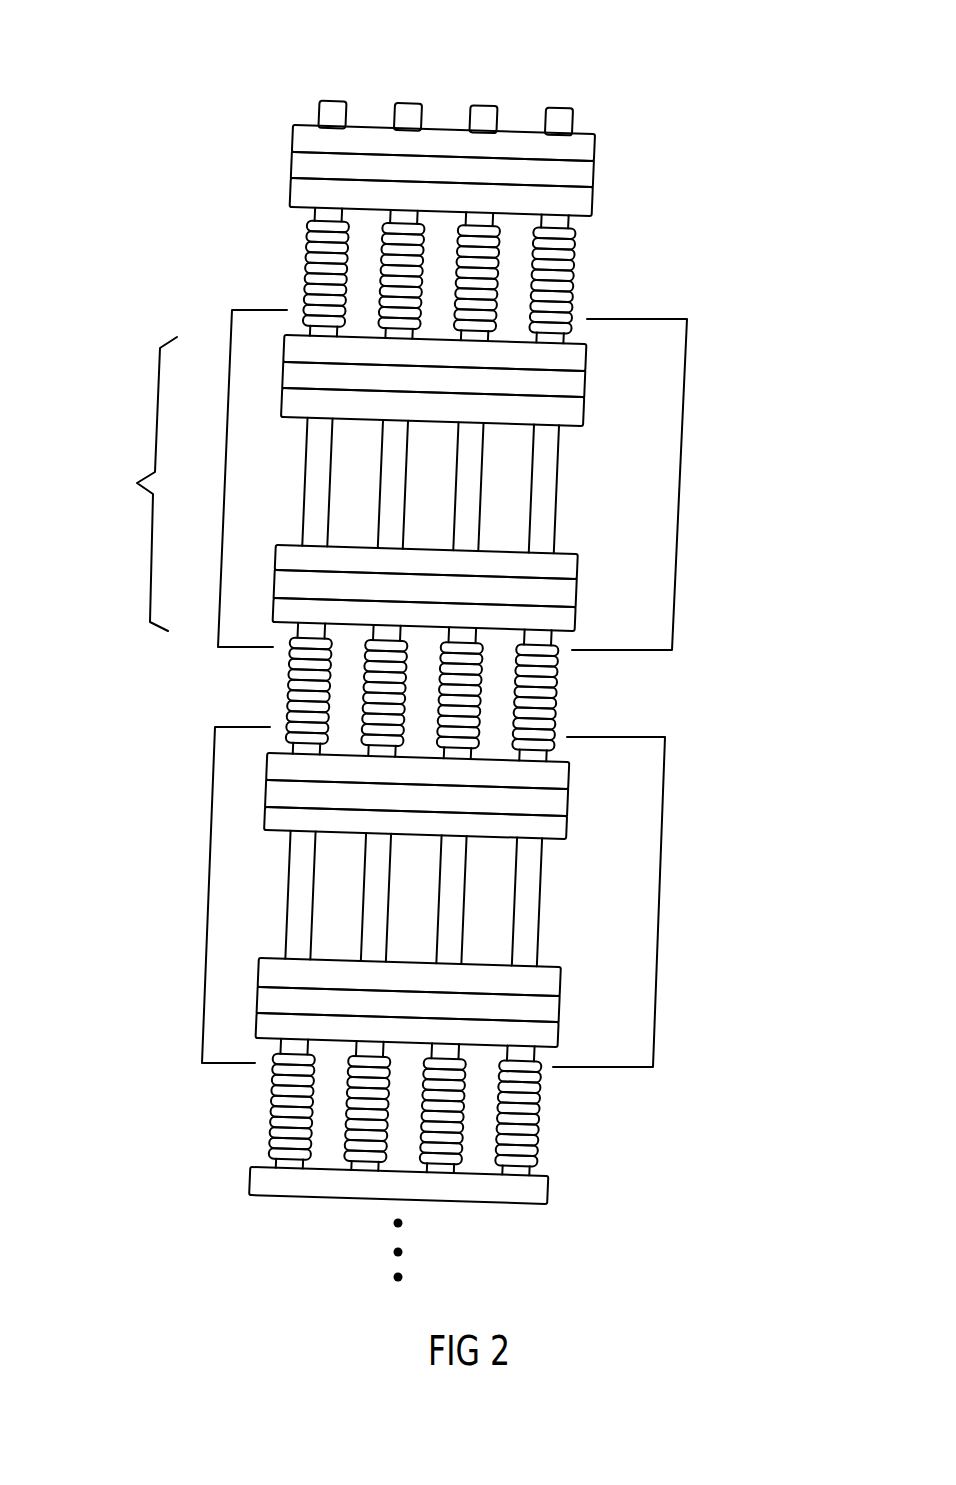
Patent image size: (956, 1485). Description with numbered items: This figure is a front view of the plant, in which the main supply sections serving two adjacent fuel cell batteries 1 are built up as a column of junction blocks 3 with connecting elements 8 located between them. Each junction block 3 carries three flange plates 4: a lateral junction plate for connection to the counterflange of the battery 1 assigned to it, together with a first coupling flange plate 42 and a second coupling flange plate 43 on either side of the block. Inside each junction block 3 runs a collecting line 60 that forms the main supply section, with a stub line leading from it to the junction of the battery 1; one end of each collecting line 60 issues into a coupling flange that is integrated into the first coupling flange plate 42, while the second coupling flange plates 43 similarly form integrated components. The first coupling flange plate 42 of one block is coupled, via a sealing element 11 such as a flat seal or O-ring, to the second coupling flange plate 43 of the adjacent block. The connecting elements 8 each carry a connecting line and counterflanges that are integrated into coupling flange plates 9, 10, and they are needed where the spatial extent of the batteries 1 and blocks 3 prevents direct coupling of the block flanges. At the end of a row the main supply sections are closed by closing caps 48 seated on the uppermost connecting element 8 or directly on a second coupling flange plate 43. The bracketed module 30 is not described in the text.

The fuel cell battery 1 is at (272, 496).
The junction block 3 is at (127, 503).
The flange plate 4 is at (317, 817).
The connecting element 8 is at (568, 273).
The coupling flange plate 9 is at (317, 190).
The coupling flange plate 10 is at (330, 350).
The sealing element 11 is at (533, 383).
The module unit 30 is at (625, 498).
The first coupling flange plate 42 is at (342, 558).
The second coupling flange plate 43 is at (332, 403).
The closing cap 48 is at (332, 96).
The collecting line 60 is at (316, 459).